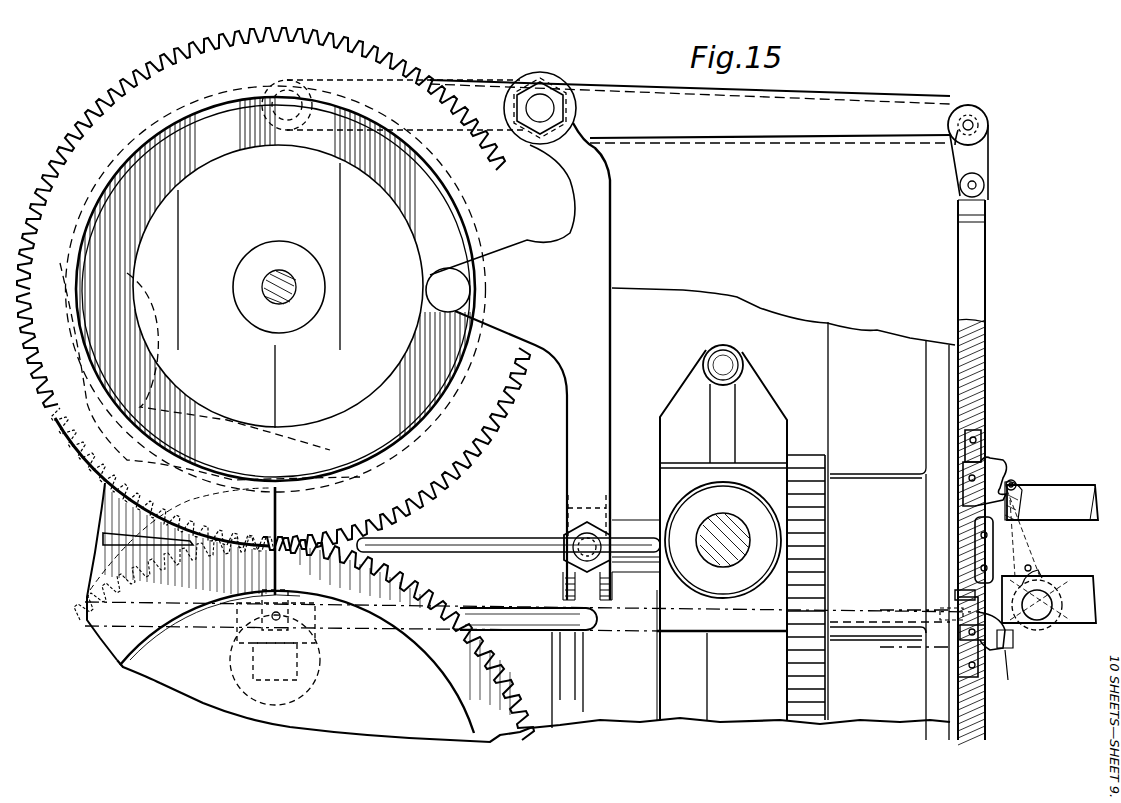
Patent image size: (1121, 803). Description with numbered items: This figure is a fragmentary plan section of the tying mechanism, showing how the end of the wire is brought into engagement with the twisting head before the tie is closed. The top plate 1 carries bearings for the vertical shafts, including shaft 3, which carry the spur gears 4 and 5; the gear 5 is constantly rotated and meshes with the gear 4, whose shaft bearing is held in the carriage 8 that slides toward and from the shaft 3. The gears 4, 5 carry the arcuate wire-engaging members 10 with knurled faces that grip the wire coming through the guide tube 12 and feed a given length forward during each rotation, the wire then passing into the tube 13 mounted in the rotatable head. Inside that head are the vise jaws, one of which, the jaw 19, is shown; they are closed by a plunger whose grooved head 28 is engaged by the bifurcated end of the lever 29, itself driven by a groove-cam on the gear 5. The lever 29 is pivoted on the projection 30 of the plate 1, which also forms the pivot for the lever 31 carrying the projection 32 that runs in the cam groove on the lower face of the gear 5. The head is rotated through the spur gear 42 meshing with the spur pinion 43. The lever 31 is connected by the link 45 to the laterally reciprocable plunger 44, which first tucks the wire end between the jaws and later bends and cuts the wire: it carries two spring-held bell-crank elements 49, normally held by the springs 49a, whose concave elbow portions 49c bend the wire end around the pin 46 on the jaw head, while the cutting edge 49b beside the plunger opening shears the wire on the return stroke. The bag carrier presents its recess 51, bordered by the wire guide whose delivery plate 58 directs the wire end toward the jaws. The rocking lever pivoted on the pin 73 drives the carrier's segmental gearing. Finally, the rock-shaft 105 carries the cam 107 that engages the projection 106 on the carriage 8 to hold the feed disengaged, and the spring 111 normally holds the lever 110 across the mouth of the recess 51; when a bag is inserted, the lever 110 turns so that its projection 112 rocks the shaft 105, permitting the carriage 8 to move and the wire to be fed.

The top plate 1 is at (520, 452).
The vertical shaft 3 is at (288, 296).
The spur gear 4 is at (297, 662).
The spur gear 5 is at (490, 448).
The carriage 8 is at (505, 665).
The wire-engaging members 10 is at (185, 539).
The guide tube 12 is at (145, 592).
The tube 13 is at (502, 550).
The vise jaw 19 is at (975, 560).
The annularly grooved head 28 is at (563, 574).
The lever 29 is at (612, 252).
The projection 30 is at (540, 100).
The lever 31 is at (660, 140).
The projection 32 is at (320, 112).
The spur gear 42 is at (890, 663).
The spur pinion 43 is at (832, 580).
The plunger 44 is at (980, 250).
The link 45 is at (978, 162).
The pin 46 is at (976, 530).
The bell-crank element 49 is at (1003, 450).
The spring 49a is at (982, 455).
The cutting edge 49b is at (963, 612).
The concave elbow portion 49c is at (1012, 482).
The recess 51 is at (1055, 488).
The plate 58 is at (1016, 482).
The pin 73 is at (718, 520).
The rock-shaft 105 is at (592, 630).
The projection 106 is at (310, 688).
The cam 107 is at (315, 640).
The lever 110 is at (1030, 530).
The spring 111 is at (1052, 620).
The projection 112 is at (1034, 570).